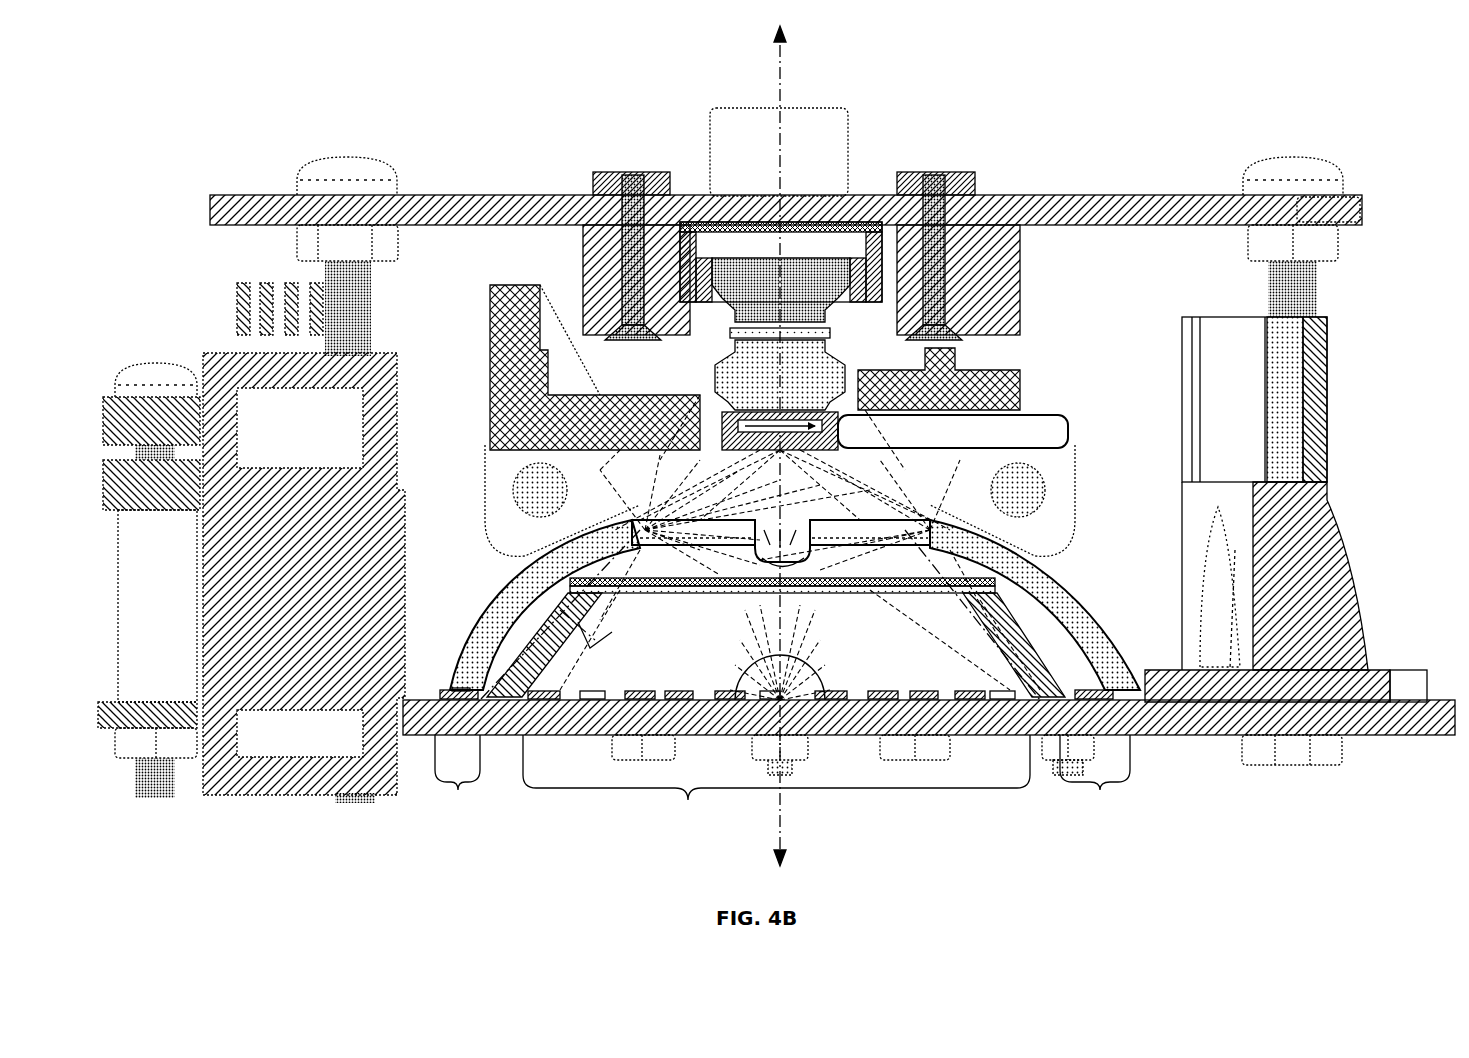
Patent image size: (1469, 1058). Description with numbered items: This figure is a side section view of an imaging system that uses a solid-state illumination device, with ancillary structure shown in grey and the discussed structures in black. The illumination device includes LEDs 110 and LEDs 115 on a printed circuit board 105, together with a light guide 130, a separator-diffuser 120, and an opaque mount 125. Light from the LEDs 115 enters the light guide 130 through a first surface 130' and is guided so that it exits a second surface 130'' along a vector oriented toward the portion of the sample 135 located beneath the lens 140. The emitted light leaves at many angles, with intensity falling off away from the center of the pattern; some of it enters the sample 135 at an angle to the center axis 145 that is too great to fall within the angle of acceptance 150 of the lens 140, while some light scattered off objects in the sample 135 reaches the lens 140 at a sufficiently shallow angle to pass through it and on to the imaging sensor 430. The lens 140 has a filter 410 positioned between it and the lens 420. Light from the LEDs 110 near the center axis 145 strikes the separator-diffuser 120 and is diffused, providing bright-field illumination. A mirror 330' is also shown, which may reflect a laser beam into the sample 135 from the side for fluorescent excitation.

The center axis 145 is at (781, 446).
The imaging sensor 430 is at (785, 240).
The lens 420 is at (782, 292).
The filter 410 is at (780, 333).
The lens 140 is at (783, 370).
The mirror 330' is at (1286, 509).
The sample 135 is at (1070, 420).
The second surface 130'' is at (924, 543).
The separator-diffuser 120 is at (995, 585).
The light guide 130 is at (810, 605).
The opaque mount 125 is at (1028, 653).
The first surface 130' is at (1143, 676).
The printed circuit board 105 is at (1177, 713).
The LEDs 110 is at (776, 789).
The LEDs 115 is at (782, 786).
The angle of acceptance 150 is at (595, 640).